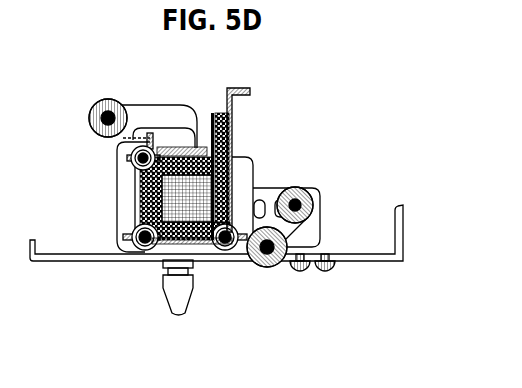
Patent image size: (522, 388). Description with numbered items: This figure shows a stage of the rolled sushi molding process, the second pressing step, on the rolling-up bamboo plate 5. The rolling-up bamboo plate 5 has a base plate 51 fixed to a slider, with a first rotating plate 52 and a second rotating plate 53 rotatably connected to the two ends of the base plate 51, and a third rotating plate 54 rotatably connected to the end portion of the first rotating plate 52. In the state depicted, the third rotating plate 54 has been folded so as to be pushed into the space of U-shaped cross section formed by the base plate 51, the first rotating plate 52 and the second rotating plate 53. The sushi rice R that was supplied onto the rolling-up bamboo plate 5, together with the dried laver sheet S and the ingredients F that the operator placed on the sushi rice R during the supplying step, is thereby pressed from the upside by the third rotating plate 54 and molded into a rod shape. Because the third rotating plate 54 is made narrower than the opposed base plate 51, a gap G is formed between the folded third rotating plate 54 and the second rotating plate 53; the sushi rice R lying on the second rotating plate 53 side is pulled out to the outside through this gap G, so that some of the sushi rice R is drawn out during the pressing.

The rolling-up bamboo plate 5 is at (302, 140).
The base plate 51 is at (200, 244).
The first rotating plate 52 is at (141, 211).
The second rotating plate 53 is at (232, 128).
The third rotating plate 54 is at (175, 147).
The ingredients F is at (141, 193).
The gap G is at (228, 152).
The sushi rice R is at (220, 113).
The dried laver sheet S is at (211, 116).